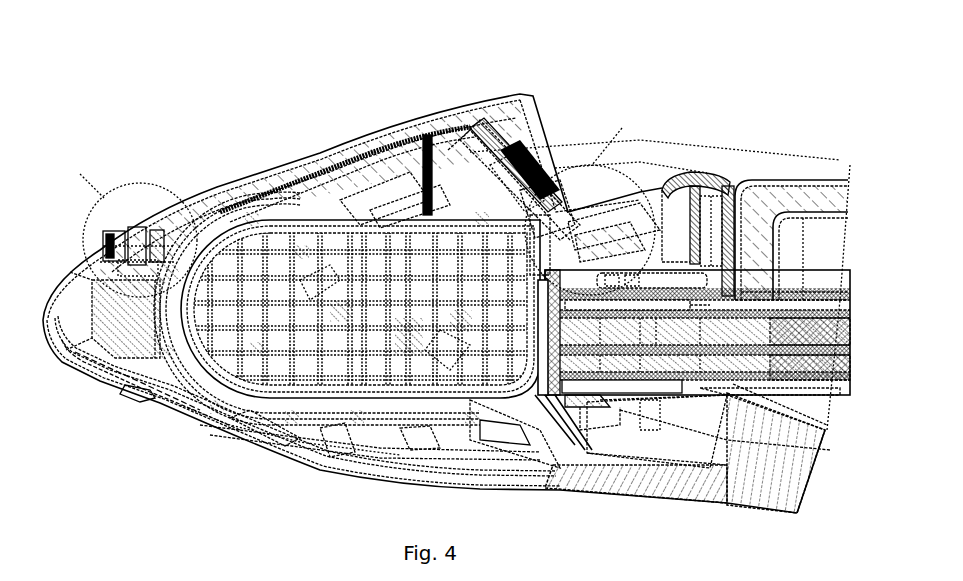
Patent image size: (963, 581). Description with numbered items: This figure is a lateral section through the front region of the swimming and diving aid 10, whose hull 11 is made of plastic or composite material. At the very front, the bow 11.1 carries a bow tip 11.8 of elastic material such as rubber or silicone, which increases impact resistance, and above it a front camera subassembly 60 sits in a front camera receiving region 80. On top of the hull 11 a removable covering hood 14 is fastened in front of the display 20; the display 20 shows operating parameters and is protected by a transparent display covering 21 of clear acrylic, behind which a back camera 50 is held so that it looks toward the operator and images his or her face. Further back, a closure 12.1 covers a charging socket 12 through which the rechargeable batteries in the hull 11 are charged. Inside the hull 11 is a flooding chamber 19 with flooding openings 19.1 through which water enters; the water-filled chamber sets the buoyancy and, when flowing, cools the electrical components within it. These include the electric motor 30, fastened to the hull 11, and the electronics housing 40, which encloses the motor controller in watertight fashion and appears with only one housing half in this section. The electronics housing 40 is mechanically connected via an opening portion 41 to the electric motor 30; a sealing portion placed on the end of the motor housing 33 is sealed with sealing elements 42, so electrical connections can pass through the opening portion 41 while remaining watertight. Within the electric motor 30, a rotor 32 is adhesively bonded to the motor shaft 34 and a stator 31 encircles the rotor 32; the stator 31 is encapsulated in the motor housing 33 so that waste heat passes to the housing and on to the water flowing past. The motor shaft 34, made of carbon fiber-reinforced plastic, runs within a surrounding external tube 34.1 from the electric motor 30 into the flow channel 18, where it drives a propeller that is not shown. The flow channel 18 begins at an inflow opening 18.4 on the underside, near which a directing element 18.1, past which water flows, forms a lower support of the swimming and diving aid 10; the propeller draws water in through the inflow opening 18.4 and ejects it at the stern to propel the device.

The swimming and diving aid 10 is at (105, 50).
The hull 11 is at (446, 303).
The bow 11.1 is at (138, 398).
The bow tip 11.8 is at (45, 325).
The charging socket 12 is at (705, 243).
The closure 12.1 is at (705, 175).
The covering hood 14 is at (362, 138).
The flow channel 18 is at (818, 405).
The directing element 18.1 is at (800, 478).
The inflow opening 18.4 is at (752, 510).
The flooding chamber 19 is at (378, 432).
The flooding openings 19.1 is at (502, 437).
The display 20 is at (592, 157).
The transparent display covering 21 is at (510, 157).
The electric motor 30 is at (660, 315).
The stator 31 is at (660, 300).
The rotor 32 is at (700, 333).
The motor housing 33 is at (665, 290).
The motor shaft 34 is at (845, 352).
The external tube 34.1 is at (845, 370).
The electronics housing 40 is at (292, 357).
The opening portion 41 is at (537, 350).
The sealing elements 42 is at (573, 407).
The back camera 50 is at (537, 197).
The front camera subassembly 60 is at (97, 246).
The front camera receiving region 80 is at (130, 208).